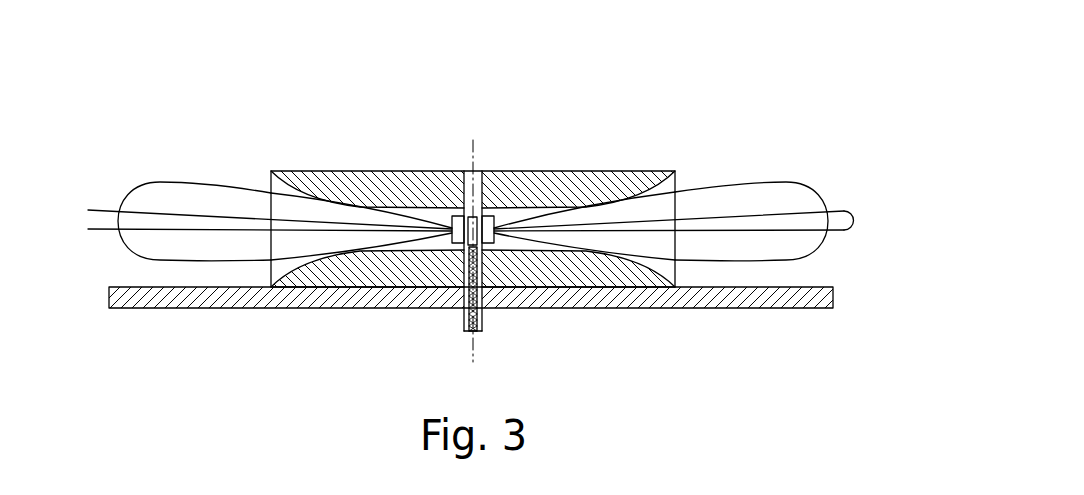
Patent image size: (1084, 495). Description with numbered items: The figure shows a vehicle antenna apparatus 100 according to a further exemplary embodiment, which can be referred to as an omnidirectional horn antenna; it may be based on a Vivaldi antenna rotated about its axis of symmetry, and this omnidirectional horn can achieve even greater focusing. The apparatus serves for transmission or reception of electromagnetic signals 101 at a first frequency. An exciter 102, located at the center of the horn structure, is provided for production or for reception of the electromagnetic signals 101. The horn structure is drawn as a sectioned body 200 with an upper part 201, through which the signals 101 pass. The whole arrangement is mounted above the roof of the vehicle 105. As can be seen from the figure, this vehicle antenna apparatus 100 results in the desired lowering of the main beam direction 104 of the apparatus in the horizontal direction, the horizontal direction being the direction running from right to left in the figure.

The vehicle antenna apparatus 100 is at (802, 103).
The electromagnetic signals 101 is at (743, 204).
The exciter 102 is at (477, 218).
The main beam direction 104 is at (838, 211).
The roof of the vehicle 105 is at (834, 298).
The holder block body 200 is at (560, 268).
The upper holder part 201 is at (382, 184).